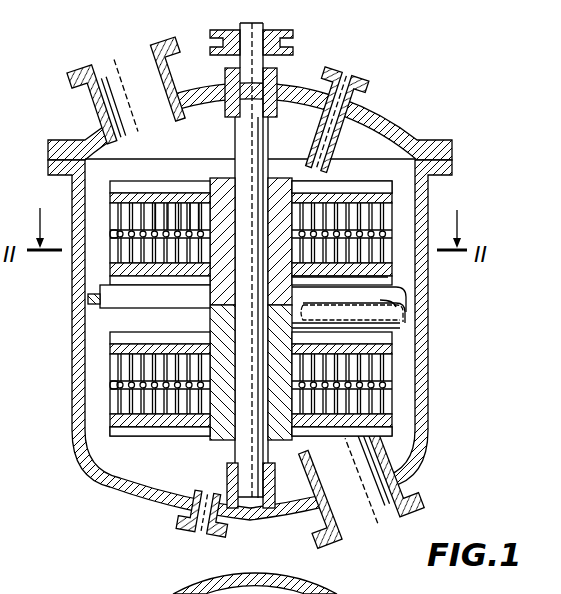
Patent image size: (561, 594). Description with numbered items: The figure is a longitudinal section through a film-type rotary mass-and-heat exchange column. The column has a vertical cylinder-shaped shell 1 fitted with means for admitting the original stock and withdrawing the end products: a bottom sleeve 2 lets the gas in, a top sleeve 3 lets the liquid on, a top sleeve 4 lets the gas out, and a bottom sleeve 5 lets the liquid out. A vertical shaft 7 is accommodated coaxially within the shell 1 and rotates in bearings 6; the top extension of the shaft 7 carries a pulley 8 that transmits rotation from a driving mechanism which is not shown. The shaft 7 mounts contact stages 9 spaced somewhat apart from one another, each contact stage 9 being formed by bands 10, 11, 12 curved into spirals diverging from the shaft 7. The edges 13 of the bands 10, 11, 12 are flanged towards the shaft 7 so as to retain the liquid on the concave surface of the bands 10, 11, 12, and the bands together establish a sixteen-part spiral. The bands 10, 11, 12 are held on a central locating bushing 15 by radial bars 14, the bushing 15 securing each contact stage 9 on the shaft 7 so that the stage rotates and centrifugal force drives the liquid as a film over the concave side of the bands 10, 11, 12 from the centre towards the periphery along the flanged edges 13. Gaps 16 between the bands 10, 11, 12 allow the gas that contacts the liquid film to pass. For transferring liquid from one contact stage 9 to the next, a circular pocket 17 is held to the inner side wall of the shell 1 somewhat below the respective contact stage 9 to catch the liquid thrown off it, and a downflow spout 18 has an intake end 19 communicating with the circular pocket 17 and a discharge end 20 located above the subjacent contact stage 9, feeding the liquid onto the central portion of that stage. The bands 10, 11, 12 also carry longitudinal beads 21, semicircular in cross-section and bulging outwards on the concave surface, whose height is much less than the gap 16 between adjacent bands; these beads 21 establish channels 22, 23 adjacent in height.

The shell 1 is at (72, 343).
The bottom sleeve 2 is at (427, 513).
The top sleeve 3 is at (368, 87).
The top sleeve 4 is at (69, 83).
The bottom sleeve 5 is at (181, 523).
The bearings 6 is at (277, 72).
The shaft 7 is at (238, 449).
The pulley 8 is at (295, 40).
The contact stages 9 is at (344, 176).
The band 10 is at (199, 208).
The band 11 is at (181, 208).
The band 12 is at (190, 208).
The flanged edges 13 is at (427, 198).
The radial bars 14 is at (393, 432).
The central locating bushing 15 is at (210, 325).
The gaps 16 is at (154, 208).
The circular pocket 17 is at (90, 299).
The downflow spout 18 is at (378, 303).
The intake end 19 is at (428, 330).
The discharge end 20 is at (393, 329).
The beads 21 is at (110, 216).
The channel 22 is at (109, 232).
The channel 23 is at (110, 252).